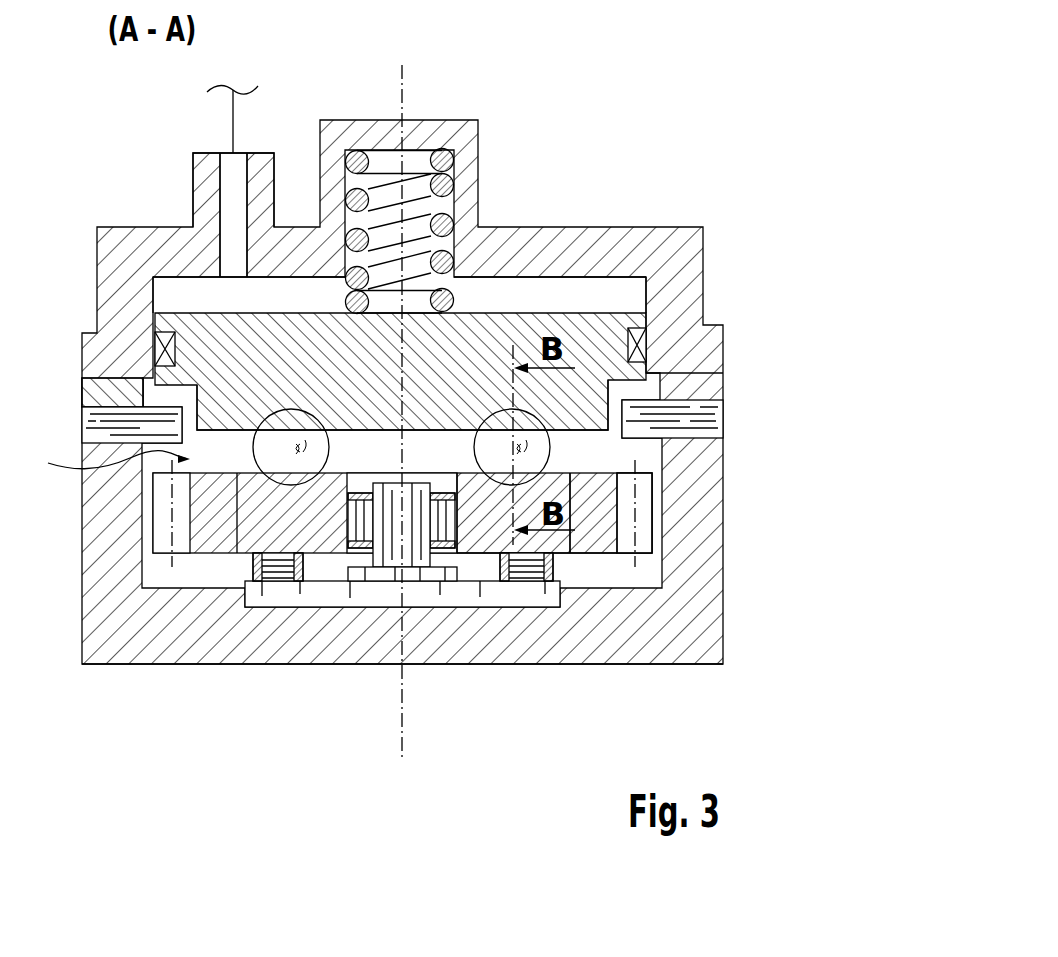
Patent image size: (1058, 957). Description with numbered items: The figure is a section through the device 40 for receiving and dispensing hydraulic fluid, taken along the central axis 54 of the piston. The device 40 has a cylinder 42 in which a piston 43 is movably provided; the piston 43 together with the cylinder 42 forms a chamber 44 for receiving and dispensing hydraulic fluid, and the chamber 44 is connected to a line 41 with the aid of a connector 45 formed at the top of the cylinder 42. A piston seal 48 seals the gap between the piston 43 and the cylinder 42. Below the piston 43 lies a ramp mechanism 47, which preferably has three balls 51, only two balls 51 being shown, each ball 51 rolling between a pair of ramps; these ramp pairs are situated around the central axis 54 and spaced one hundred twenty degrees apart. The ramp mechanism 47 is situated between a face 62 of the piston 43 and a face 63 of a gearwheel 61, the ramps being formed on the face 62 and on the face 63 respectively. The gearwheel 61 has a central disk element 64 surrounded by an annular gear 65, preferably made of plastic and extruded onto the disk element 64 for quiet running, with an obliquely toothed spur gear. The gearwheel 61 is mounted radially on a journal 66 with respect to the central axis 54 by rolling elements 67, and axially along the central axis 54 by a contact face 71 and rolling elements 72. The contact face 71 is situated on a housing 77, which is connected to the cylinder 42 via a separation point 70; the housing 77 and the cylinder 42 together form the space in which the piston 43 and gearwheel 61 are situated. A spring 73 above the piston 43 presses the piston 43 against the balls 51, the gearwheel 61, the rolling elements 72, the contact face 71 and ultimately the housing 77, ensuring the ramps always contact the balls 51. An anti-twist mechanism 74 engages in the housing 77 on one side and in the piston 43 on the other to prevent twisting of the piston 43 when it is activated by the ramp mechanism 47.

The device 40 is at (88, 110).
The line 41 is at (233, 117).
The cylinder 42 is at (688, 277).
The piston 43 is at (199, 322).
The chamber 44 is at (572, 292).
The connector 45 is at (206, 177).
The ramp mechanism 47 is at (104, 464).
The piston seal 48 is at (173, 352).
The ball 51 is at (338, 452).
The central axis 54 is at (403, 745).
The gearwheel 61 is at (277, 538).
The face of piston 62 is at (593, 428).
The face of gearwheel 63 is at (246, 463).
The central disk element 64 is at (480, 540).
The annular gear 65 is at (627, 540).
The journal 66 is at (396, 540).
The rolling elements 67 is at (345, 522).
The separation point 70 is at (700, 366).
The contact face 71 is at (307, 597).
The rolling elements 72 is at (517, 565).
The spring 73 is at (362, 160).
The anti-twist mechanism 74 is at (97, 422).
The housing 77 is at (575, 618).